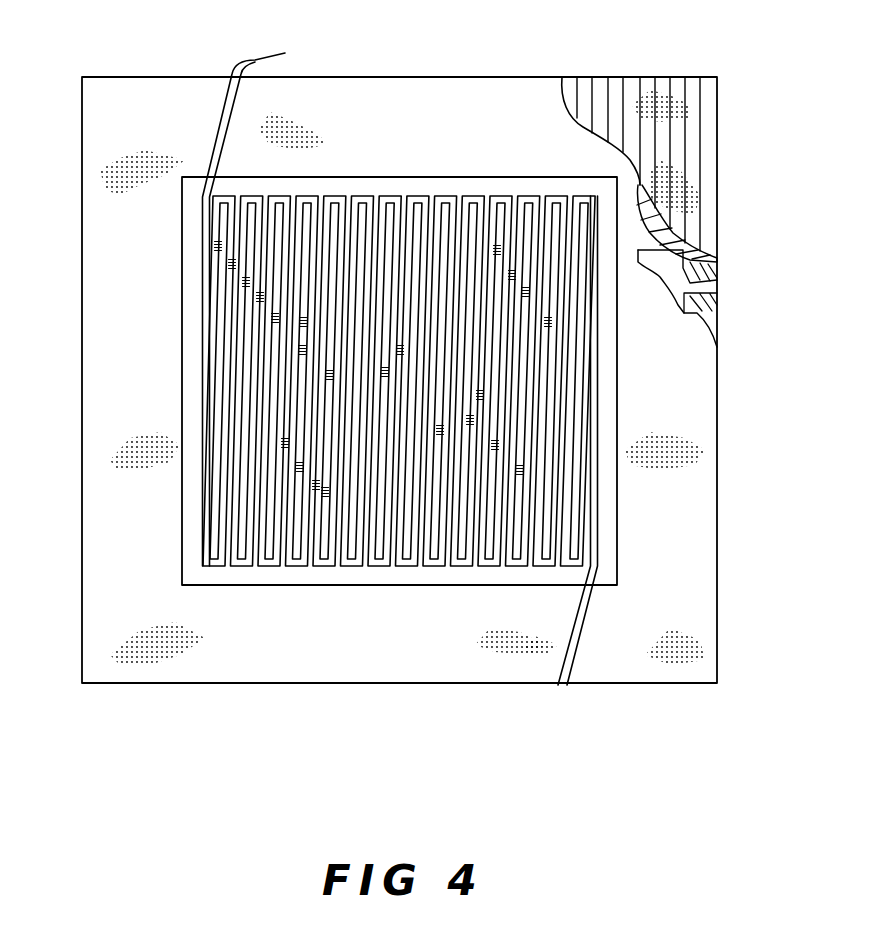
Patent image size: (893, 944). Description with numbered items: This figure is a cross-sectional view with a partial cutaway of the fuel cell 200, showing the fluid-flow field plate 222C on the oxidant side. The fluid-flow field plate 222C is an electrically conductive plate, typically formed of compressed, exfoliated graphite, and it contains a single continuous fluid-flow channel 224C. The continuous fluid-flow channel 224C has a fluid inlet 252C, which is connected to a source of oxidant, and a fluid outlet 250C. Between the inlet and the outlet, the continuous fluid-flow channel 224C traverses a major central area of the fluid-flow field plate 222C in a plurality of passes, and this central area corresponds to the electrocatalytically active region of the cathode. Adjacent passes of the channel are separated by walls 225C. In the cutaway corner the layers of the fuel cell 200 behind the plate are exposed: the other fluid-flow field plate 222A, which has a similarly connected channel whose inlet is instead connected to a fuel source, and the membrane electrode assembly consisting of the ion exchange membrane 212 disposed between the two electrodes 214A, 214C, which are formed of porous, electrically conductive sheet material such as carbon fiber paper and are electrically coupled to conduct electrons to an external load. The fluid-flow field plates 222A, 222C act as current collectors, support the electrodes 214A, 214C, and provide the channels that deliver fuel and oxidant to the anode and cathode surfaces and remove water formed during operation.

The fuel cell 200 is at (808, 554).
The ion exchange membrane 212 is at (697, 288).
The electrode 214A is at (700, 247).
The electrode 214C is at (702, 312).
The fluid-flow field plate 222A is at (653, 108).
The fluid-flow field plate 222C is at (702, 613).
The continuous fluid-flow channel 224C is at (527, 197).
The walls 225C is at (477, 556).
The fluid outlet 250C is at (562, 685).
The fluid inlet 252C is at (269, 298).